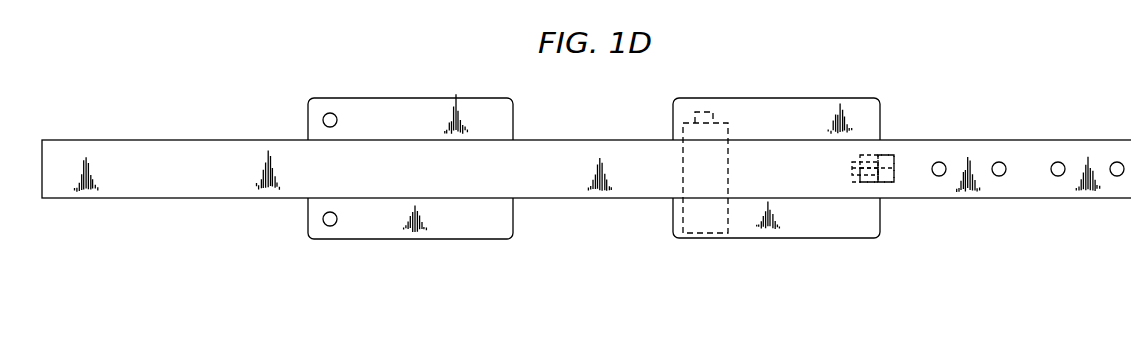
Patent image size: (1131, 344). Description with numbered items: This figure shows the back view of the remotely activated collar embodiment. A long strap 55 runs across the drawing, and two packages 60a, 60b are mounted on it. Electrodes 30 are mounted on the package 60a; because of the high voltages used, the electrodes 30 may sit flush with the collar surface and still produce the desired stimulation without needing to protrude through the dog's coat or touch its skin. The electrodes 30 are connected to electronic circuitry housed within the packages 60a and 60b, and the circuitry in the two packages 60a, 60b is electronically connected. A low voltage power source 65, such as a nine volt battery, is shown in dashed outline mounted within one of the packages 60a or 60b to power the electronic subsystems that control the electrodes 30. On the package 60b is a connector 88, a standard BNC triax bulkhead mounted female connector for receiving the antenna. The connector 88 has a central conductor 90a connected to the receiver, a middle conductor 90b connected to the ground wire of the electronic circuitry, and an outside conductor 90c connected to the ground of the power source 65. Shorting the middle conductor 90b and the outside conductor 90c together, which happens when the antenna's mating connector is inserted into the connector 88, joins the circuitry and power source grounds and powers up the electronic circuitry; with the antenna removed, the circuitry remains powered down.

The strap 55 is at (161, 140).
The electrodes 30 is at (337, 122).
The package 60a is at (388, 239).
The package 60b is at (753, 238).
The low voltage power source 65 is at (713, 112).
The connector 88 is at (889, 153).
The central conductor 90a is at (856, 168).
The middle conductor 90b is at (861, 183).
The outside conductor 90c is at (860, 194).